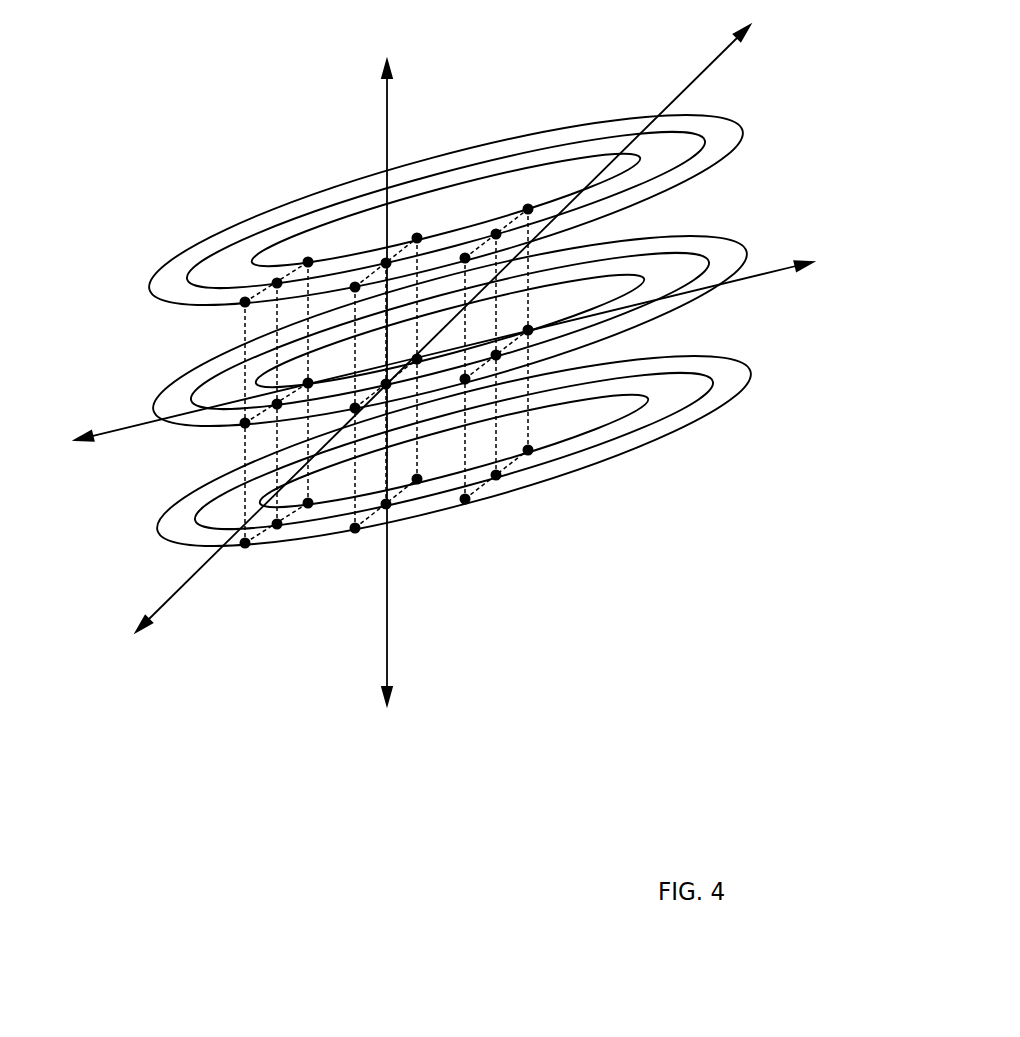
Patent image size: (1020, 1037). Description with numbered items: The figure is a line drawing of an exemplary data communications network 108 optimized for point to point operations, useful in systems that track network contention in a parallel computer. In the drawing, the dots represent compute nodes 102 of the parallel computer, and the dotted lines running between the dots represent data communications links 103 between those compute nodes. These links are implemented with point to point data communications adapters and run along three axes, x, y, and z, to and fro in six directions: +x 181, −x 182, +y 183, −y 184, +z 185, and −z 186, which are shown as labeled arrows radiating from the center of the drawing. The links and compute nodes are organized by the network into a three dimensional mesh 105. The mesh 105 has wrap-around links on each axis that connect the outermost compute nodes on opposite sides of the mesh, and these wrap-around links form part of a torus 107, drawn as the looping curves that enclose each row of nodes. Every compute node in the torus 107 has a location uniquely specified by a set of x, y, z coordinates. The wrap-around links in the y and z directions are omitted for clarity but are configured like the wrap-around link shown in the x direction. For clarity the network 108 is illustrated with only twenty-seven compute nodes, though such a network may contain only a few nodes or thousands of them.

The compute nodes 102 is at (527, 448).
The data communications links 103 is at (245, 452).
The three dimensional mesh 105 is at (416, 403).
The torus 107 is at (224, 207).
The data communications network 108 is at (436, 507).
The +x direction 181 is at (847, 291).
The −x direction 182 is at (73, 478).
The +y direction 183 is at (790, 51).
The −y direction 184 is at (133, 680).
The +z direction 185 is at (402, 51).
The −z direction 186 is at (404, 765).